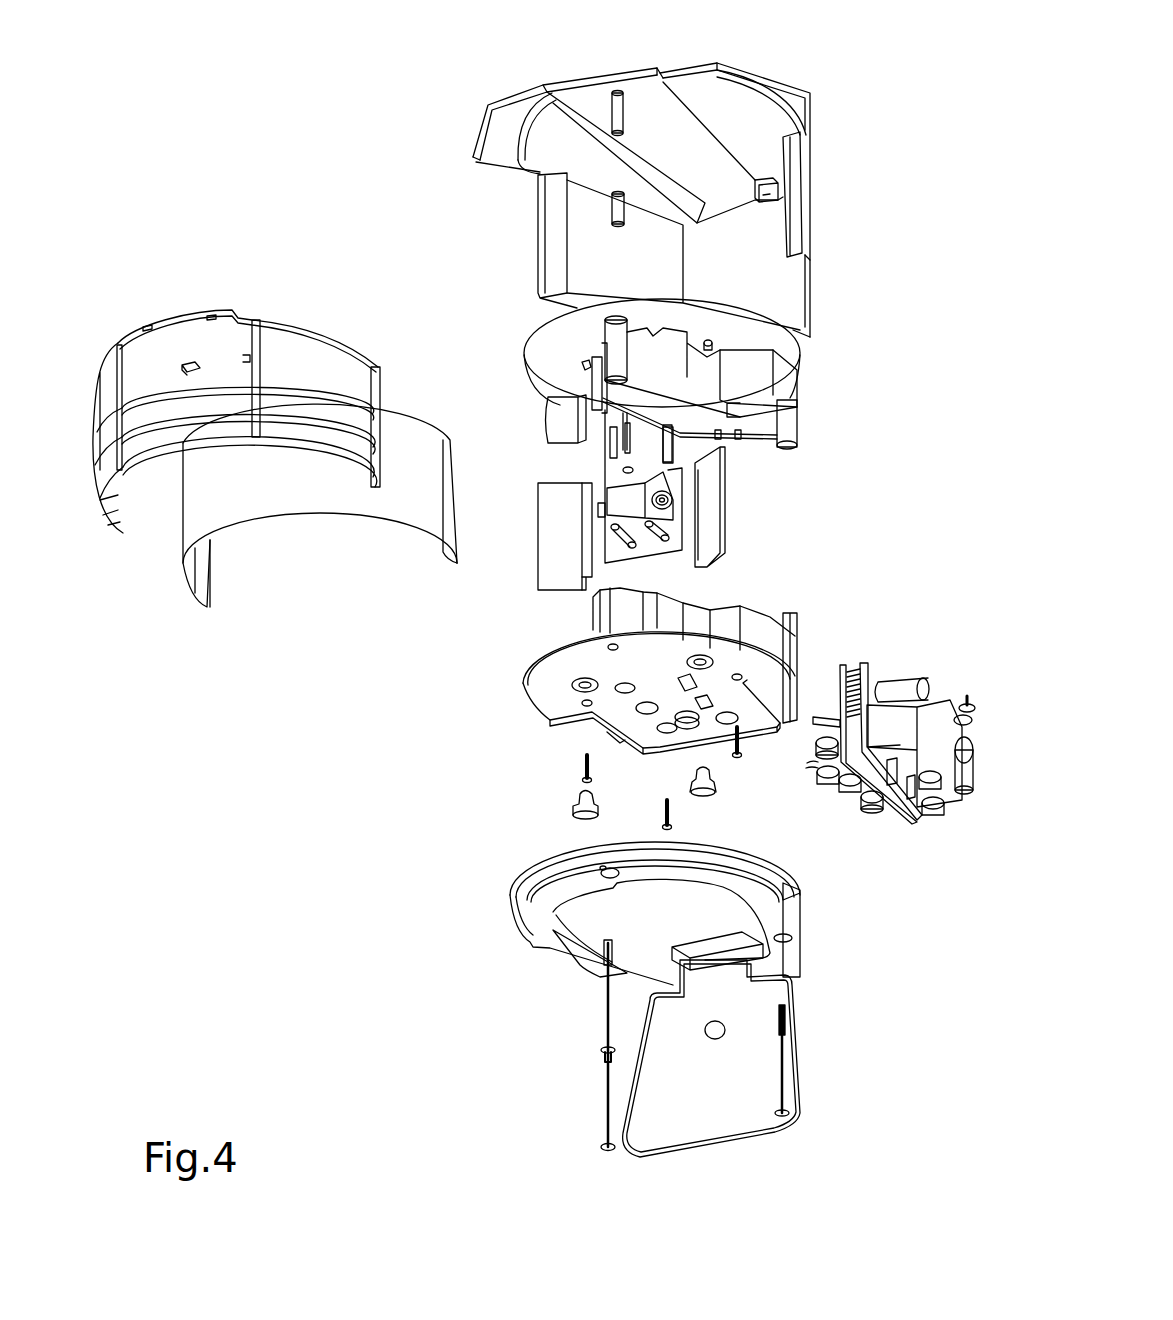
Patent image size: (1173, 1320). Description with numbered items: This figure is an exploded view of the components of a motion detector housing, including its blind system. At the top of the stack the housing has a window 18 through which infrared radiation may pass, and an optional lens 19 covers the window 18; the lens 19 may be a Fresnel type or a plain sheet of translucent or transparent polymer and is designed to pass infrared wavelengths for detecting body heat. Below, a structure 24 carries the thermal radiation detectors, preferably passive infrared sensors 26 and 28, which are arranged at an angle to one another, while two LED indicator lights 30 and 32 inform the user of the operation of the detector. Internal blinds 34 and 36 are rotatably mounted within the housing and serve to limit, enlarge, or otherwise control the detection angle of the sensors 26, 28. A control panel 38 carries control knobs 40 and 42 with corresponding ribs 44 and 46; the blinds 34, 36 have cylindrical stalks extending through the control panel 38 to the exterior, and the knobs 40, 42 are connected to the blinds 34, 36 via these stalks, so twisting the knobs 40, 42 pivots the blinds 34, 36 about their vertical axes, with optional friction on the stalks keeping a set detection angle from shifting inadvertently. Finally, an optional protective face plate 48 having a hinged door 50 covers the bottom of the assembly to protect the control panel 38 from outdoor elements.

The window 18 is at (283, 345).
The lens 19 is at (260, 490).
The structure 24 is at (551, 349).
The PIR sensor 26 is at (673, 497).
The PIR sensor 28 is at (598, 518).
The LED indicator light 30 is at (588, 366).
The LED indicator light 32 is at (710, 343).
The internal blind 34 is at (710, 520).
The internal blind 36 is at (548, 573).
The control panel 38 is at (550, 708).
The control knob 40 is at (585, 684).
The control knob 42 is at (710, 660).
The rib 44 is at (575, 803).
The rib 46 is at (710, 792).
The protective face plate 48 is at (762, 910).
The hinged door 50 is at (710, 1105).